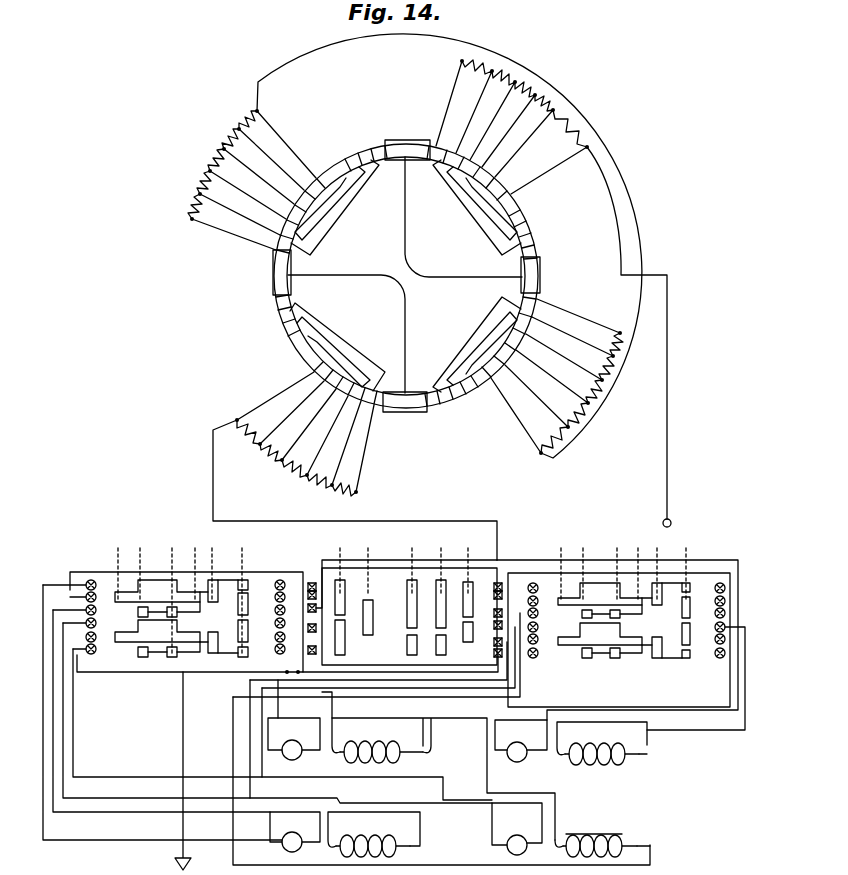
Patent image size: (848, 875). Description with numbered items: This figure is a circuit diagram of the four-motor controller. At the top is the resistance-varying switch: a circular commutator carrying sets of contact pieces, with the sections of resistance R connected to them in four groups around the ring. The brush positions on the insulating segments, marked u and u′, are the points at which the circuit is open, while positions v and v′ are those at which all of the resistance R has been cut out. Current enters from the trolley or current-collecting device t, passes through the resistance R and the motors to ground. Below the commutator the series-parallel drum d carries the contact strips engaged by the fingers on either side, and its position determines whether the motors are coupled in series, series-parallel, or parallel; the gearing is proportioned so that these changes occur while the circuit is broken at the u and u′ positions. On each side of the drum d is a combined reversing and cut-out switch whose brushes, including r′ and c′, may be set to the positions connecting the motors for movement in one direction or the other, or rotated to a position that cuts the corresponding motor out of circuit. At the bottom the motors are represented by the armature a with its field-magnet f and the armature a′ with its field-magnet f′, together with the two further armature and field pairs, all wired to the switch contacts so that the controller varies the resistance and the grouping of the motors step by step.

The resistance R is at (405, 277).
The brush position (insulating segment) u is at (406, 264).
The brush position (insulating segment) u′ is at (541, 275).
The brush position (no resistance) v is at (477, 207).
The brush position (no resistance) v′ is at (477, 344).
The trolley or current-collecting device t is at (635, 337).
The brush c′ is at (186, 603).
The finger (brush) r′ is at (621, 634).
The series-parallel drum d is at (402, 601).
The motor armature a is at (294, 729).
The field-magnet f is at (443, 768).
The motor armature a′ is at (521, 730).
The field-magnet f′ is at (602, 731).